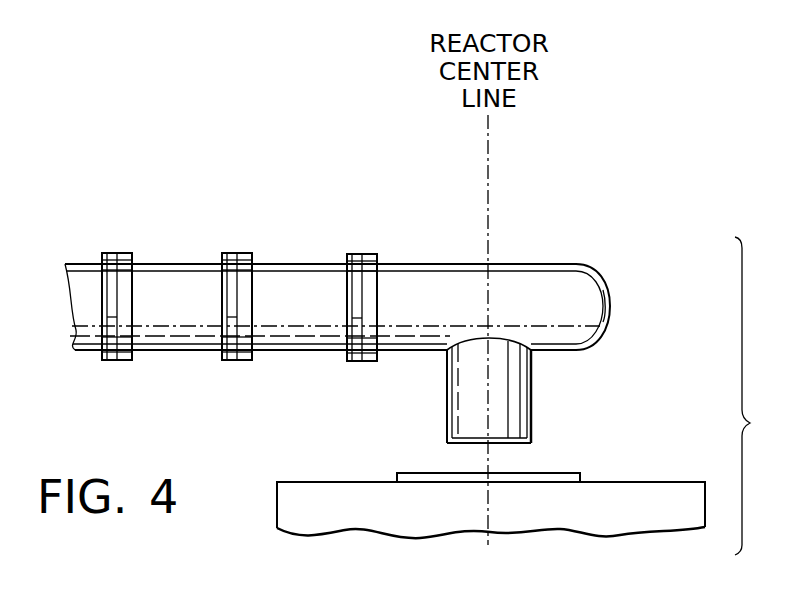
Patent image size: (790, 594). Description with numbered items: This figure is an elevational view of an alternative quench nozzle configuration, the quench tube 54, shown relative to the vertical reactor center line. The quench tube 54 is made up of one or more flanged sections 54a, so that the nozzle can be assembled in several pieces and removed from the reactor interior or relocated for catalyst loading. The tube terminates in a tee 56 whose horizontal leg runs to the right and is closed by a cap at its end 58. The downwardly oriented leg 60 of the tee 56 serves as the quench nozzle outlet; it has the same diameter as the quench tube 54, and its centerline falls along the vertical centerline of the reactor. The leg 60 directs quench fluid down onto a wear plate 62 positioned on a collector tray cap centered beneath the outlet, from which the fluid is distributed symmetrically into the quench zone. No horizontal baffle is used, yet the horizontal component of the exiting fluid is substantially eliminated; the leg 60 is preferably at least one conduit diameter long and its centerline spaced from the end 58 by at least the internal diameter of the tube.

The quench tube 54 is at (277, 179).
The flanged sections 54a is at (80, 258).
The tee 56 is at (563, 263).
The cap 58 is at (607, 339).
The downwardly oriented leg 60 is at (533, 403).
The wear plate 62 is at (582, 473).